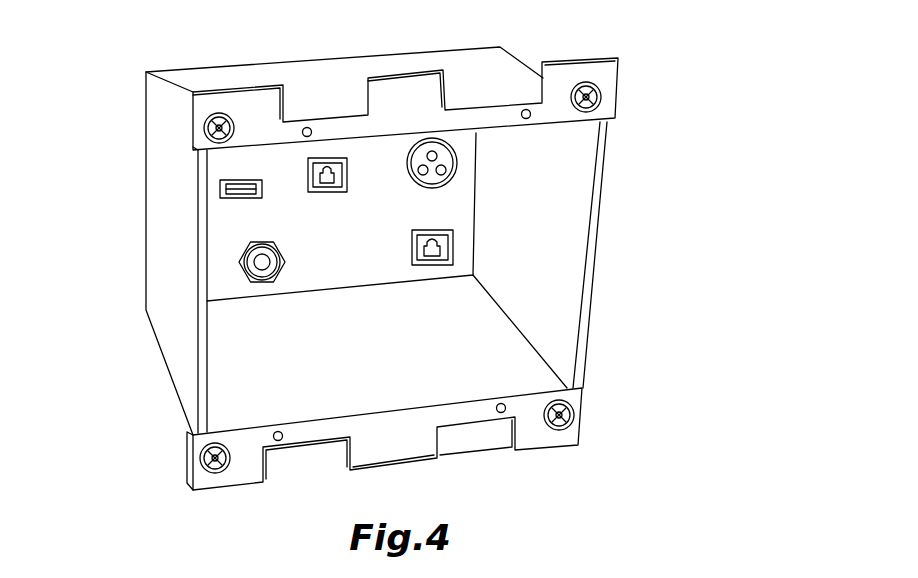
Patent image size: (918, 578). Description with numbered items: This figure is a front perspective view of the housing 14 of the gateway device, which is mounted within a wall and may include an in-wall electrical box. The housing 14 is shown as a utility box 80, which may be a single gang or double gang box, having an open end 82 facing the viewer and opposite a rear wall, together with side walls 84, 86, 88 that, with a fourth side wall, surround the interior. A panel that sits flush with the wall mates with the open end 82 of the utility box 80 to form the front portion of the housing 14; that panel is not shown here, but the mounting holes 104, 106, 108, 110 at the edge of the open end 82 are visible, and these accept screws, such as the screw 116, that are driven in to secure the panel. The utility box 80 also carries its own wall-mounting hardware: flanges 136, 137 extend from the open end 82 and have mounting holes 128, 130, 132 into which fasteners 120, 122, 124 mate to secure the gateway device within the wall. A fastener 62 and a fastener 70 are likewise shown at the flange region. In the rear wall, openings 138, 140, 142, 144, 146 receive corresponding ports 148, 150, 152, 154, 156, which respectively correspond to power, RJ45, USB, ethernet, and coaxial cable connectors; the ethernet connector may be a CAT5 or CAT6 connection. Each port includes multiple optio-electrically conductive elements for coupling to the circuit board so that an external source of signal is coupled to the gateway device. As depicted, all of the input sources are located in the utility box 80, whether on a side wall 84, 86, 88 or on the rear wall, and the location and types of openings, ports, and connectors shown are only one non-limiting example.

The housing 14 is at (640, 215).
The mounting plate 62 is at (205, 133).
The fastener 70 is at (216, 112).
The utility box 80 is at (550, 295).
The open end 82 is at (590, 248).
The side wall 84 is at (296, 404).
The side wall 86 is at (170, 342).
The side wall 88 is at (410, 60).
The mounting hole 104 is at (524, 110).
The mounting hole 106 is at (502, 413).
The mounting hole 108 is at (278, 441).
The mounting hole 110 is at (305, 127).
The screw 116 is at (390, 263).
The fastener 120 is at (596, 104).
The fastener 122 is at (571, 422).
The fastener 124 is at (223, 471).
The mounting hole 128 is at (577, 84).
The mounting hole 130 is at (556, 430).
The mounting hole 132 is at (207, 471).
The flange 136 is at (612, 70).
The flange 137 is at (577, 402).
The opening 138 is at (452, 142).
The opening 140 is at (341, 157).
The opening 142 is at (230, 178).
The opening 144 is at (437, 229).
The opening 146 is at (244, 244).
The port 148 is at (456, 170).
The port 150 is at (308, 178).
The port 152 is at (214, 196).
The port 154 is at (432, 266).
The port 156 is at (241, 268).